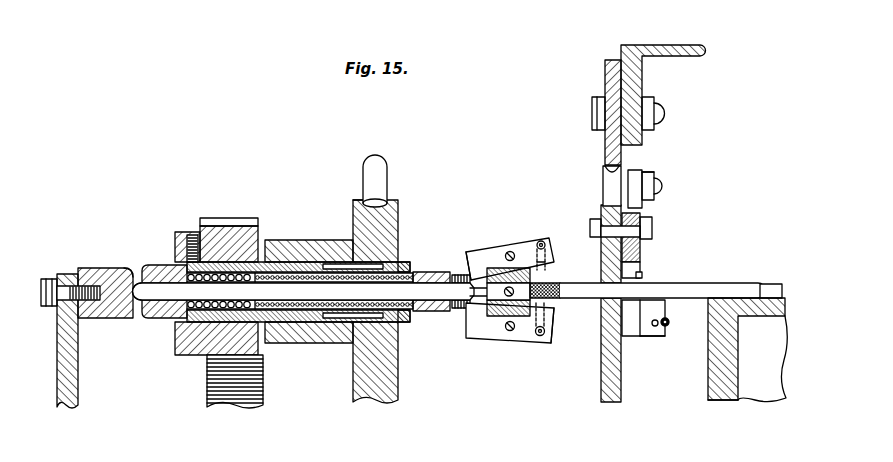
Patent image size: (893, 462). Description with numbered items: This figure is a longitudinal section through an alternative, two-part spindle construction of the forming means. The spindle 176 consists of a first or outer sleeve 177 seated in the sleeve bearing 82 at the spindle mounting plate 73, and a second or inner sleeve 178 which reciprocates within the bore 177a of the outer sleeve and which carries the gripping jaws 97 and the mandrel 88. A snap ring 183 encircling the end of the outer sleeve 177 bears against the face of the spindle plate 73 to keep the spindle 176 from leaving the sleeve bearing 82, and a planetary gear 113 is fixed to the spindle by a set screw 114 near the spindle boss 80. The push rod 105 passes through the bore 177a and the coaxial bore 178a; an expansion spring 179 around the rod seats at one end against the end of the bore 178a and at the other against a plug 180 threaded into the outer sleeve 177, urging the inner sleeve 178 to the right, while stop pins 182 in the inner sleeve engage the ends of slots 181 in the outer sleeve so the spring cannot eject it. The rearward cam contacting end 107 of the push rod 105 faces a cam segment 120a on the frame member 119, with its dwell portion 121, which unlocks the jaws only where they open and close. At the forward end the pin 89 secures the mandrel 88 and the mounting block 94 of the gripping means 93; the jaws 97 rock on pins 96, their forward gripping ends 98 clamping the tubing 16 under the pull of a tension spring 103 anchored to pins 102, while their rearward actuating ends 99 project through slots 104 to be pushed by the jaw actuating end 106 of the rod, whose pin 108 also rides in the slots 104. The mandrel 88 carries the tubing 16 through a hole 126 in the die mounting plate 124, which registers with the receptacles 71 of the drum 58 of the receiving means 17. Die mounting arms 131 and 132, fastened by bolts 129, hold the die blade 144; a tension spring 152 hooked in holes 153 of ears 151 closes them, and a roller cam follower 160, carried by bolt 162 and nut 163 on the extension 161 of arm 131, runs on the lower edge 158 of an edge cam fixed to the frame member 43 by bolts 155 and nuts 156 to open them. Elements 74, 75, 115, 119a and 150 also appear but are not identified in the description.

The tubing 16 is at (725, 283).
The receiving means 17 is at (750, 402).
The frame member 43 is at (673, 46).
The drum 58 is at (708, 365).
The receptacles 71 is at (773, 284).
The spindle mounting plate 73 is at (398, 205).
The block corner 74 is at (353, 202).
The pin 75 is at (362, 170).
The spindle boss 80 is at (268, 240).
The sleeve bearing 82 is at (355, 360).
The mandrel 88 is at (552, 292).
The pin 89 is at (500, 308).
The gripping means 93 is at (507, 352).
The mounting block 94 is at (500, 250).
The pins 96 is at (530, 250).
The gripping jaws 97 is at (548, 352).
The forward gripping ends 98 is at (548, 330).
The rearward actuating ends 99 is at (474, 262).
The pin 102 is at (546, 252).
The tension spring 103 is at (548, 306).
The slots 104 is at (458, 275).
The push rod 105 is at (228, 290).
The jaw actuating end 106 is at (470, 291).
The cam contacting end 107 is at (137, 302).
The pin 108 is at (459, 300).
The planetary gear 113 is at (222, 218).
The set screw 114 is at (191, 232).
The threaded stud 115 is at (207, 396).
The frame member 119 is at (79, 360).
The bolt 119a is at (46, 308).
The cam segment 120a is at (88, 266).
The dwell portion 121 is at (130, 266).
The die mounting plate 124 is at (602, 387).
The holes 126 is at (608, 330).
The bolts 129 is at (652, 229).
The die mounting arm 131 is at (642, 246).
The die mounting arm 132 is at (642, 265).
The die blade 144 is at (642, 276).
The plate 150 is at (604, 141).
The ears 151 is at (656, 337).
The tension spring 152 is at (668, 326).
The holes 153 is at (650, 337).
The bolts 155 is at (592, 110).
The nuts 156 is at (656, 104).
The lower edge 158 is at (632, 175).
The roller cam follower 160 is at (607, 185).
The elongated extension 161 is at (632, 204).
The bolt 162 is at (657, 188).
The nut 163 is at (650, 177).
The spindle 176 is at (296, 343).
The outer sleeve 177 is at (167, 320).
The bore 177a is at (205, 310).
The inner sleeve 178 is at (430, 312).
The bore 178a is at (332, 318).
The expansion spring 179 is at (283, 262).
The plug 180 is at (147, 263).
The slots 181 is at (325, 264).
The stop pins 182 is at (402, 323).
The snap ring 183 is at (402, 262).